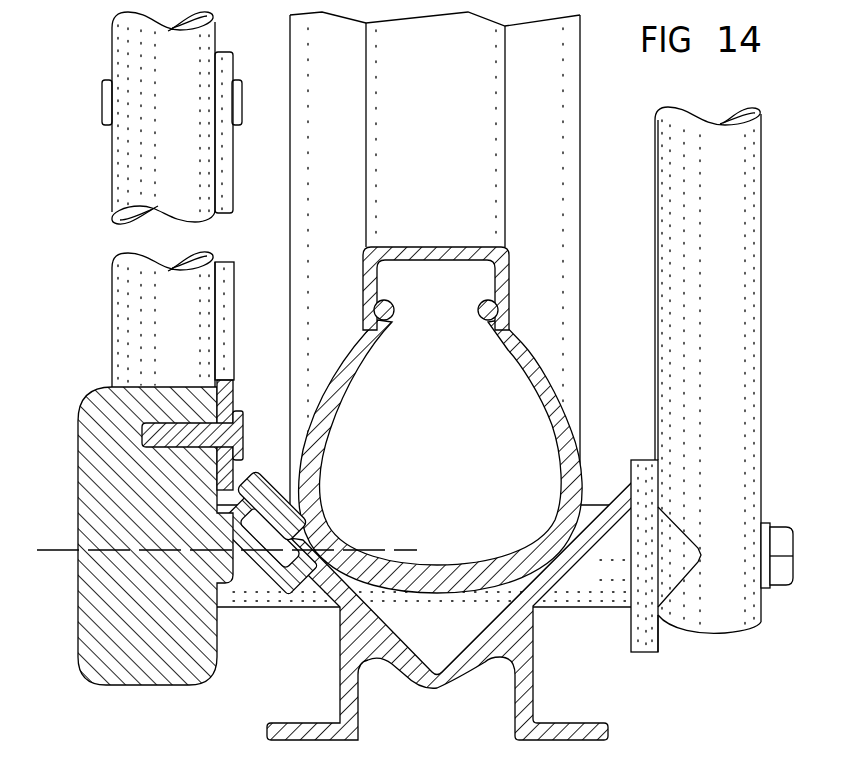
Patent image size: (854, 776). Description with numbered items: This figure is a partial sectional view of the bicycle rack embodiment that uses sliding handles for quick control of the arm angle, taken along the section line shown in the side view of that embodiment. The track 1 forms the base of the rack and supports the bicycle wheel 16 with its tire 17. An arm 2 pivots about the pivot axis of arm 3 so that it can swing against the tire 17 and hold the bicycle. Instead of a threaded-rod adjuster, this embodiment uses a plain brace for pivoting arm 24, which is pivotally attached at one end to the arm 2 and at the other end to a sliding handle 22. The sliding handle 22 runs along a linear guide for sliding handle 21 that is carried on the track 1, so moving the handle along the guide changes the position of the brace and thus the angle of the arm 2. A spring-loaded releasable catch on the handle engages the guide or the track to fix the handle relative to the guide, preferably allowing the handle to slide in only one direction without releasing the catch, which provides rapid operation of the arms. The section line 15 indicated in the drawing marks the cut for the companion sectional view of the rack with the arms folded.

The track 1 is at (513, 632).
The arm 2 is at (118, 283).
The pivot axis of arm 3 is at (797, 557).
The section line 15 is at (28, 548).
The wheel 16 is at (456, 98).
The tire 17 is at (456, 477).
The guide for sliding handle 21 is at (297, 577).
The sliding handle 22 is at (93, 475).
The plain brace for pivoting arm 24 is at (225, 283).